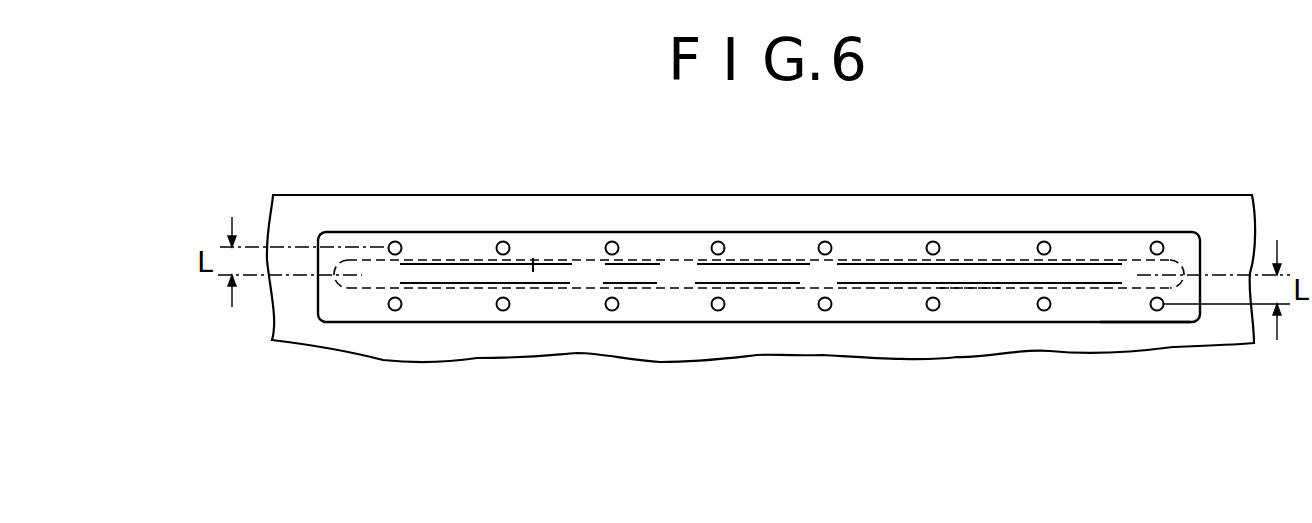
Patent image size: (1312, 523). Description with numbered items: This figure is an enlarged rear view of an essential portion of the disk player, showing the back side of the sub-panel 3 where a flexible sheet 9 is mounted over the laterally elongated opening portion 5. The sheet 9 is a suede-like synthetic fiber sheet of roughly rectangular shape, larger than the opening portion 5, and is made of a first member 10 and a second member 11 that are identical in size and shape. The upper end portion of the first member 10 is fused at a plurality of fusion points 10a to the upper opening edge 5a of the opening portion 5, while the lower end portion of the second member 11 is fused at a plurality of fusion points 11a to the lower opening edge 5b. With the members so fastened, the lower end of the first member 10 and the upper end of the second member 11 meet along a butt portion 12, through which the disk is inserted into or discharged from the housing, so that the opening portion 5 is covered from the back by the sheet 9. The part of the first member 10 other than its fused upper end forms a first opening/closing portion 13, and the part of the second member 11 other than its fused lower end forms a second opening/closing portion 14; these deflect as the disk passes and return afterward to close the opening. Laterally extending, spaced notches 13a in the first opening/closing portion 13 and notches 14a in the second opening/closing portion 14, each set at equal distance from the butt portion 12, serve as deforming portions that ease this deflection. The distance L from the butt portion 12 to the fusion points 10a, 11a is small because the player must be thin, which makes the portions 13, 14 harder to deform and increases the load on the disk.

The sub-panel 3 is at (757, 208).
The opening portion 5 is at (806, 288).
The upper opening edge 5a is at (977, 262).
The lower opening edge 5b is at (963, 290).
The sheet 9 is at (735, 322).
The first member 10 is at (863, 230).
The fusion points 10a is at (501, 242).
The second member 11 is at (1117, 310).
The fusion points 11a is at (500, 309).
The butt portion 12 is at (432, 285).
The first opening/closing portion 13 is at (533, 262).
The notches 13a is at (563, 260).
The second opening/closing portion 14 is at (588, 281).
The notches 14a is at (541, 288).